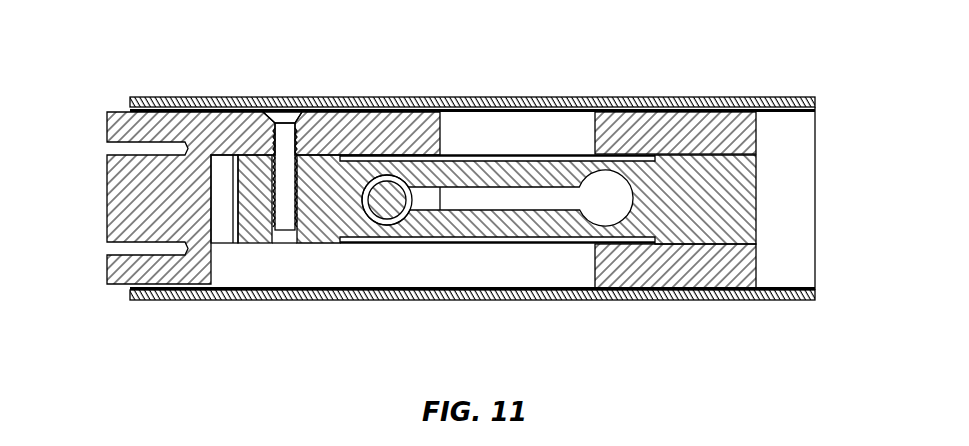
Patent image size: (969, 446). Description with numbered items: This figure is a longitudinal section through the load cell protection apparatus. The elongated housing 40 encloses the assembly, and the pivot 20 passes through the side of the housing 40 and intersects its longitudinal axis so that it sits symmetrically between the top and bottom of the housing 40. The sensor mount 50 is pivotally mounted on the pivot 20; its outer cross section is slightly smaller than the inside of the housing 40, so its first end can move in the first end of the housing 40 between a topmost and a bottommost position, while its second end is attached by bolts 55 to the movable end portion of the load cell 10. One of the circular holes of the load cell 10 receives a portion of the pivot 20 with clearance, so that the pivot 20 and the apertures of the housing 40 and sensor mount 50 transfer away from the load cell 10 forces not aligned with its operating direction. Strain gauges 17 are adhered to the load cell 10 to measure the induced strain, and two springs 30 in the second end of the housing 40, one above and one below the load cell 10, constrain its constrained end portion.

The load cell 10 is at (706, 196).
The strain gauges 17 is at (492, 150).
The pivot 20 is at (386, 208).
The spring 30 is at (761, 137).
The housing 40 is at (776, 95).
The sensor mount 50 is at (103, 180).
The bolts 55 is at (288, 108).